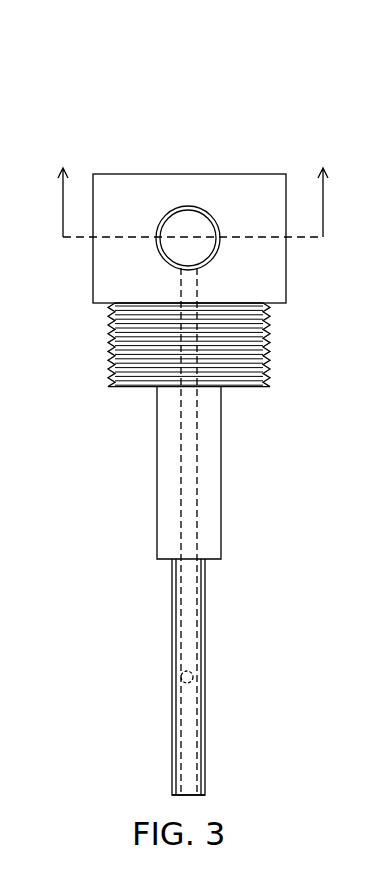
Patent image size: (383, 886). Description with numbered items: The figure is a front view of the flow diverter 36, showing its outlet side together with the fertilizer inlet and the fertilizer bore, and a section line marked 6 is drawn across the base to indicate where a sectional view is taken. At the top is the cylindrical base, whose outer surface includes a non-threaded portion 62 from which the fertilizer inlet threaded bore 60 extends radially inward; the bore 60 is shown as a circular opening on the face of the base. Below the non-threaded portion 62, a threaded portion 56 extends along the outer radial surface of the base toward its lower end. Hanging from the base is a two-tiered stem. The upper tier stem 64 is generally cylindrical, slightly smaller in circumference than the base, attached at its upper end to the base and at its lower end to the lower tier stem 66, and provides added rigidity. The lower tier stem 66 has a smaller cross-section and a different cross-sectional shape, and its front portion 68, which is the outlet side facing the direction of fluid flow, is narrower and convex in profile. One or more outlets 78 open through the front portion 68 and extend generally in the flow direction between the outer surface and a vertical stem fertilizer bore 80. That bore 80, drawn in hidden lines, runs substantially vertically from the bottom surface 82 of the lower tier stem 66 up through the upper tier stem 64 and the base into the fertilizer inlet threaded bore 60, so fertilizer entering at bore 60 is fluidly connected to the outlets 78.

The section line 6- 6 is at (195, 192).
The flow diverter 36 is at (264, 120).
The threaded portion 56 is at (247, 358).
The fertilizer inlet threaded bore 60 is at (183, 242).
The non-threaded portion 62 is at (247, 270).
The upper tier stem 64 is at (212, 468).
The lower tier stem 66 is at (200, 625).
The front portion 68 is at (200, 590).
The outlet 78 is at (184, 684).
The vertical stem fertilizer bore 80 is at (188, 605).
The bottom surface 82 is at (203, 795).